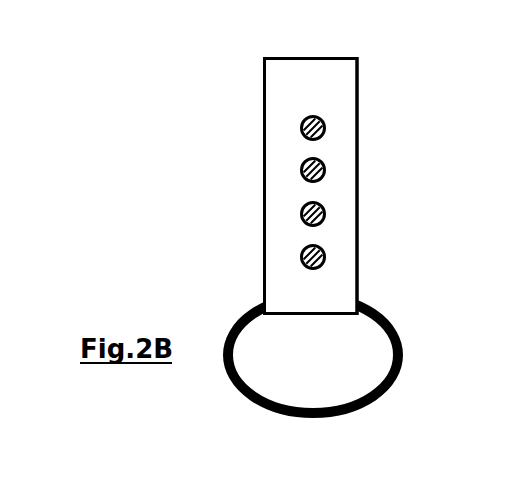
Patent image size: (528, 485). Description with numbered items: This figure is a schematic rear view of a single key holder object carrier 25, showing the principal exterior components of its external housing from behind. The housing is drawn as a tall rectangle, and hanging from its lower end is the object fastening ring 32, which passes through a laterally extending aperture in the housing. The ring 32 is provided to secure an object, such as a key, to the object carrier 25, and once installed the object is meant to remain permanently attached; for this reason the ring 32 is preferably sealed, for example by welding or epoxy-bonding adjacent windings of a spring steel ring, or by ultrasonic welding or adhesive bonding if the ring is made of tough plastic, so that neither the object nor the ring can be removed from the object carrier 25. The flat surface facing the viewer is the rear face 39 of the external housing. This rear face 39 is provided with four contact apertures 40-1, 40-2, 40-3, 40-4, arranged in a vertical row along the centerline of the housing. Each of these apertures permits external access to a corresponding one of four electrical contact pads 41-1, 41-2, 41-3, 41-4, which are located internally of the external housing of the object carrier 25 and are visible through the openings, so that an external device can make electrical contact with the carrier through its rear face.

The object carrier 25 is at (363, 78).
The object fastening ring 32 is at (397, 323).
The rear face 39 is at (333, 198).
The contact aperture 40-1 is at (301, 123).
The contact aperture 40-2 is at (301, 168).
The contact aperture 40-3 is at (301, 213).
The contact aperture 40-4 is at (301, 258).
The electrical contact pad 41-1 is at (325, 125).
The electrical contact pad 41-2 is at (325, 166).
The electrical contact pad 41-3 is at (325, 213).
The electrical contact pad 41-4 is at (325, 257).